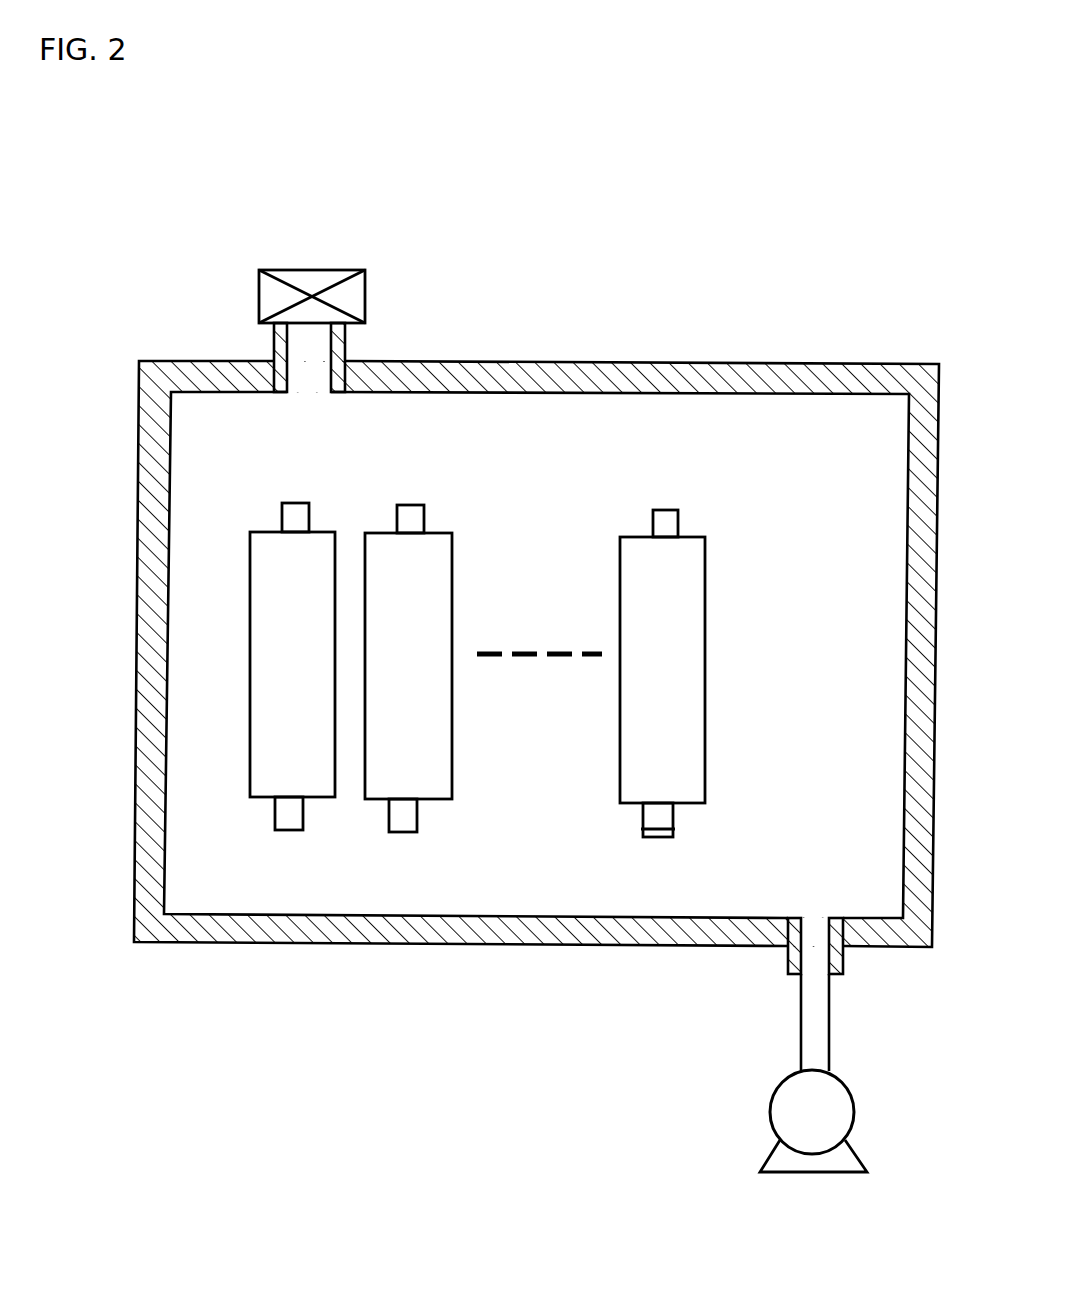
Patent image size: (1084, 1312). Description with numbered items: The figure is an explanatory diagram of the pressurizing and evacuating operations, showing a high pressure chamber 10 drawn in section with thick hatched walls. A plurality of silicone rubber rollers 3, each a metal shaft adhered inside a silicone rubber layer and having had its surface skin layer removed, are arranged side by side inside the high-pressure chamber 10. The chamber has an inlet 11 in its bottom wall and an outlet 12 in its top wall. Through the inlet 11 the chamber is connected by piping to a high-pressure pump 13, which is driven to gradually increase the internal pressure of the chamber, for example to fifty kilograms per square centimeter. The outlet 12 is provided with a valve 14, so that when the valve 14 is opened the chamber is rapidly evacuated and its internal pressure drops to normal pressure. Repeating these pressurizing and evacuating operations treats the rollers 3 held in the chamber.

The high pressure chamber 10 is at (752, 305).
The silicone rubber roller 3 is at (688, 561).
The inlet 11 is at (842, 962).
The outlet 12 is at (343, 348).
The high-pressure pump 13 is at (778, 1103).
The valve 14 is at (317, 270).